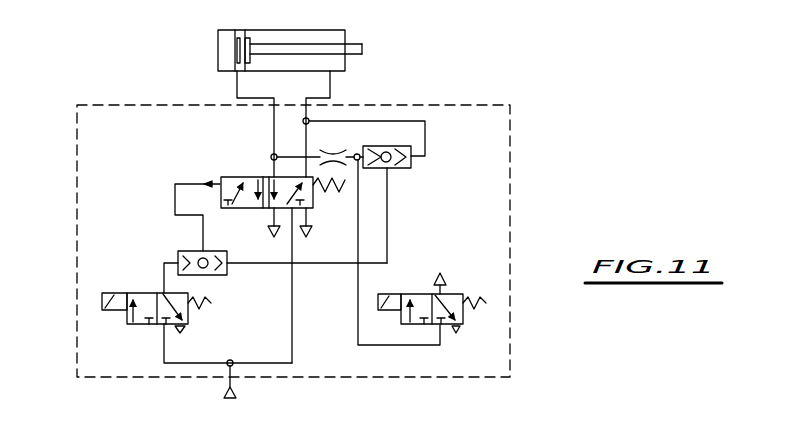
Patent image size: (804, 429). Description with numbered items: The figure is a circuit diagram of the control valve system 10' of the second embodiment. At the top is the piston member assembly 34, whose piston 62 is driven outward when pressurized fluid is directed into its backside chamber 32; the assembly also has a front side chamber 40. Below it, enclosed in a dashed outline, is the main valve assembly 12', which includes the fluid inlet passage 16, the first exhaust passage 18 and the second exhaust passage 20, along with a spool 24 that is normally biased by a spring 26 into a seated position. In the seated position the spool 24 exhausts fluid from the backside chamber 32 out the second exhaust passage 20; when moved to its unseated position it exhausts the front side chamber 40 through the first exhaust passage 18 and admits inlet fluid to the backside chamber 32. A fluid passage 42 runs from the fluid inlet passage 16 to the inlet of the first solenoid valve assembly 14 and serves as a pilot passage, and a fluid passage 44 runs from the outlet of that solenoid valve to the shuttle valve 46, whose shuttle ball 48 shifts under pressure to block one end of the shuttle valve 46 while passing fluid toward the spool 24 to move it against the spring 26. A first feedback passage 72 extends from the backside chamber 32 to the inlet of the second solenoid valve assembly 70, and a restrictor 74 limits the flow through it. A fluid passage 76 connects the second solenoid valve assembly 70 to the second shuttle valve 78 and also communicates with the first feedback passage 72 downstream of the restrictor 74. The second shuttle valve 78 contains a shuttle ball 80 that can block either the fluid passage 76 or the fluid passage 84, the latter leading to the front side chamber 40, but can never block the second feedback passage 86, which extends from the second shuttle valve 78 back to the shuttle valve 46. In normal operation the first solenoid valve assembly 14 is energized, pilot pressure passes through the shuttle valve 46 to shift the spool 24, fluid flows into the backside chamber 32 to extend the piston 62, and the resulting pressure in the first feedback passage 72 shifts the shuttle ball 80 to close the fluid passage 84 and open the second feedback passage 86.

The control valve system 10' is at (117, 27).
The main valve assembly 12' is at (326, 228).
The first solenoid valve assembly 14 is at (133, 327).
The fluid inlet passage 16 is at (222, 389).
The first exhaust passage 18 is at (313, 220).
The second exhaust passage 20 is at (267, 223).
The spool 24 is at (243, 174).
The spring 26 is at (329, 198).
The backside chamber 32 is at (218, 58).
The piston member assembly 34 is at (292, 44).
The front side chamber 40 is at (345, 64).
The fluid passage 42 is at (192, 328).
The fluid passage 44 is at (163, 263).
The shuttle valve 46 is at (263, 259).
The shuttle ball 48 is at (212, 275).
The piston 62 is at (273, 44).
The second solenoid valve assembly 70 is at (455, 295).
The first feedback passage 72 is at (286, 154).
The restrictor 74 is at (333, 157).
The fluid passage 76 is at (355, 152).
The second shuttle valve 78 is at (398, 166).
The shuttle ball 80 is at (396, 145).
The fluid passage 84 is at (410, 121).
The second feedback passage 86 is at (389, 232).